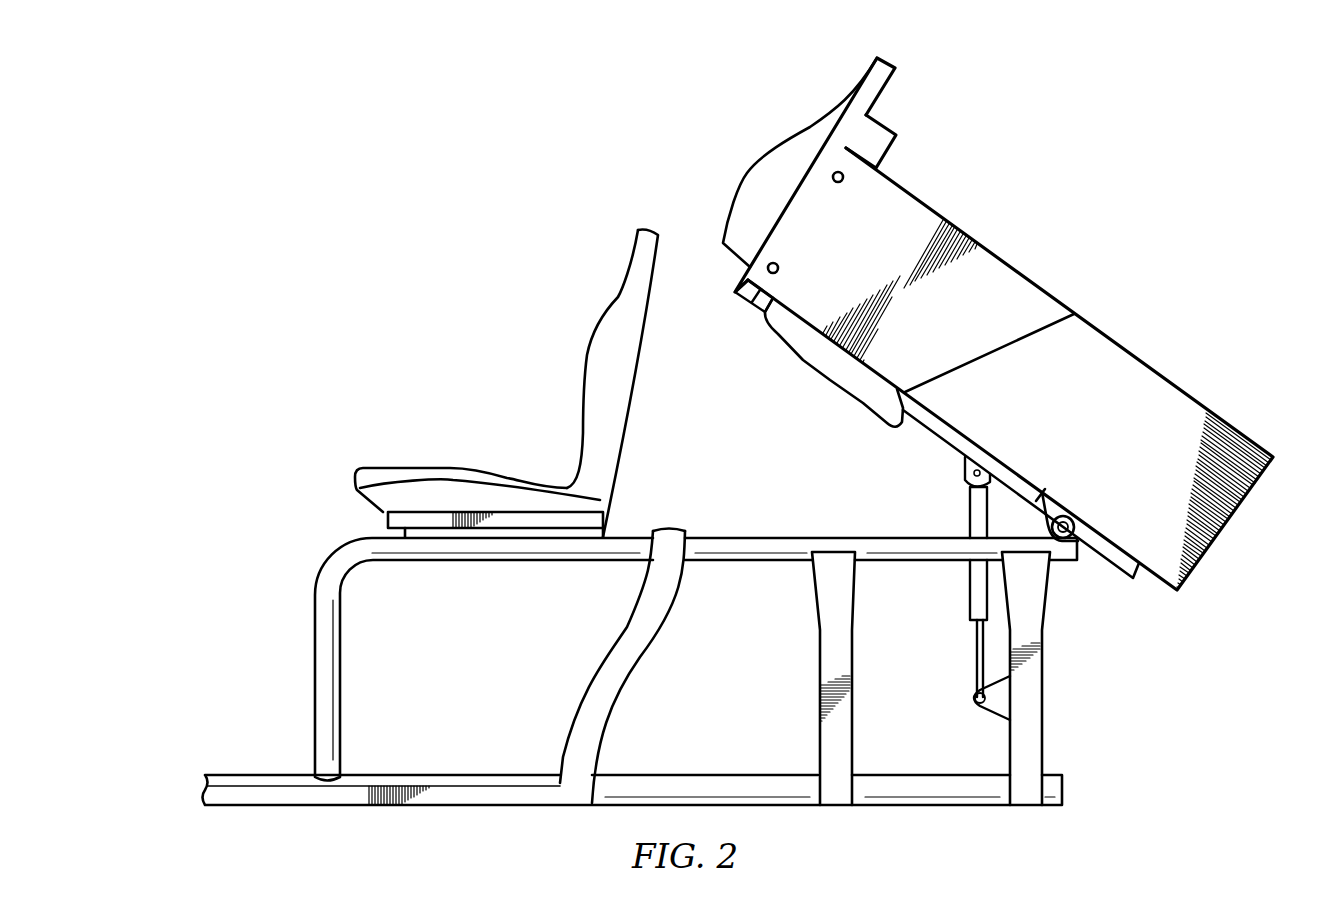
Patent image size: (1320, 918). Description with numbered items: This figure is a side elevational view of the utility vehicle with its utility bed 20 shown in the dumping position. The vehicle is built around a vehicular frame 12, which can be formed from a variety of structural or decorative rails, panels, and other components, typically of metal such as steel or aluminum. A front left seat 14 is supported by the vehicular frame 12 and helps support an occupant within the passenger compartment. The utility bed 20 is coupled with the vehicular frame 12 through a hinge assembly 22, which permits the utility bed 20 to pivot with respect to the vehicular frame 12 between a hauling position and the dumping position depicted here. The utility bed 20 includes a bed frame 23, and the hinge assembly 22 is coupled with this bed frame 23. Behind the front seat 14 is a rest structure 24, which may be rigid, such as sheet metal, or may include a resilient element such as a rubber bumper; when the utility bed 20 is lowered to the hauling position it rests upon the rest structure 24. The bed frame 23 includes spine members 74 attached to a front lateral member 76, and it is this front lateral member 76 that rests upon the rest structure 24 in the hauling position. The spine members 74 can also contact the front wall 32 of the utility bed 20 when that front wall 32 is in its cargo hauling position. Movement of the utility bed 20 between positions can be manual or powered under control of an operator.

The vehicular frame 12 is at (932, 808).
The front left seat 14 is at (468, 385).
The utility bed 20 is at (1092, 258).
The hinge assembly 22 is at (1092, 582).
The bed frame 23 is at (900, 455).
The rest structure 24 is at (684, 500).
The front wall 32 is at (905, 108).
The spine members 74 is at (946, 452).
The front lateral member 76 is at (747, 300).